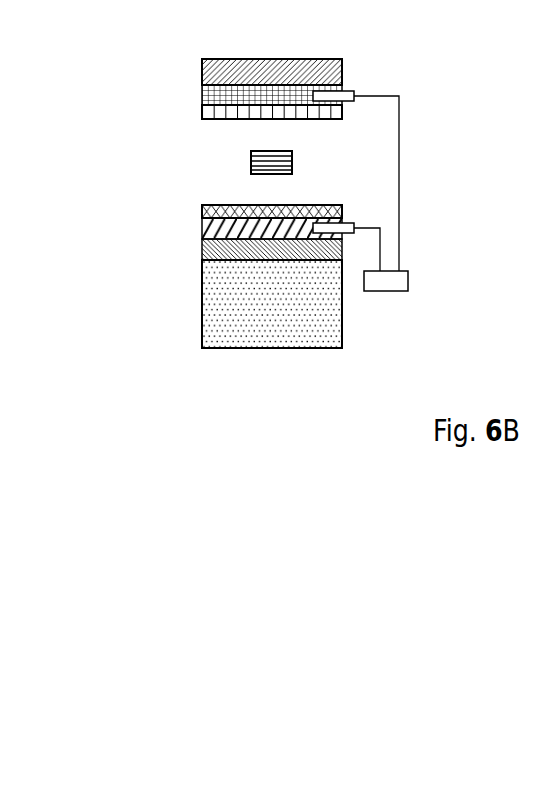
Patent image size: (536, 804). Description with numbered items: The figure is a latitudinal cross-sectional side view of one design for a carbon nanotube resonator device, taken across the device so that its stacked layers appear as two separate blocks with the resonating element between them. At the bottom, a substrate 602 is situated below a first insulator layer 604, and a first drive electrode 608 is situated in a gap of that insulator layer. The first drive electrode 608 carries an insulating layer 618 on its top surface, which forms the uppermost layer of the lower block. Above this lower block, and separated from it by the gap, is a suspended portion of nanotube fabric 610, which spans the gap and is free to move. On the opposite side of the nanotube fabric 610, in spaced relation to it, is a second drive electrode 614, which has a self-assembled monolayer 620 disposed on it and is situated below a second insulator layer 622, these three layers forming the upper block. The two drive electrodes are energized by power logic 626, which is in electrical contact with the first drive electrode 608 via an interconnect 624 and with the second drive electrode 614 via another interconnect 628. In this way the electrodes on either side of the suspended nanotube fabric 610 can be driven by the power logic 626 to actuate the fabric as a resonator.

The substrate 602 is at (193, 302).
The first insulator layer 604 is at (193, 250).
The first drive electrode 608 is at (193, 228).
The nanotube fabric 610 is at (190, 162).
The second drive electrode 614 is at (193, 96).
The insulating layer 618 is at (193, 212).
The self-assembled monolayer 620 is at (193, 116).
The second insulator layer 622 is at (193, 72).
The interconnect 624 is at (392, 228).
The power logic 626 is at (419, 281).
The interconnect 628 is at (415, 96).